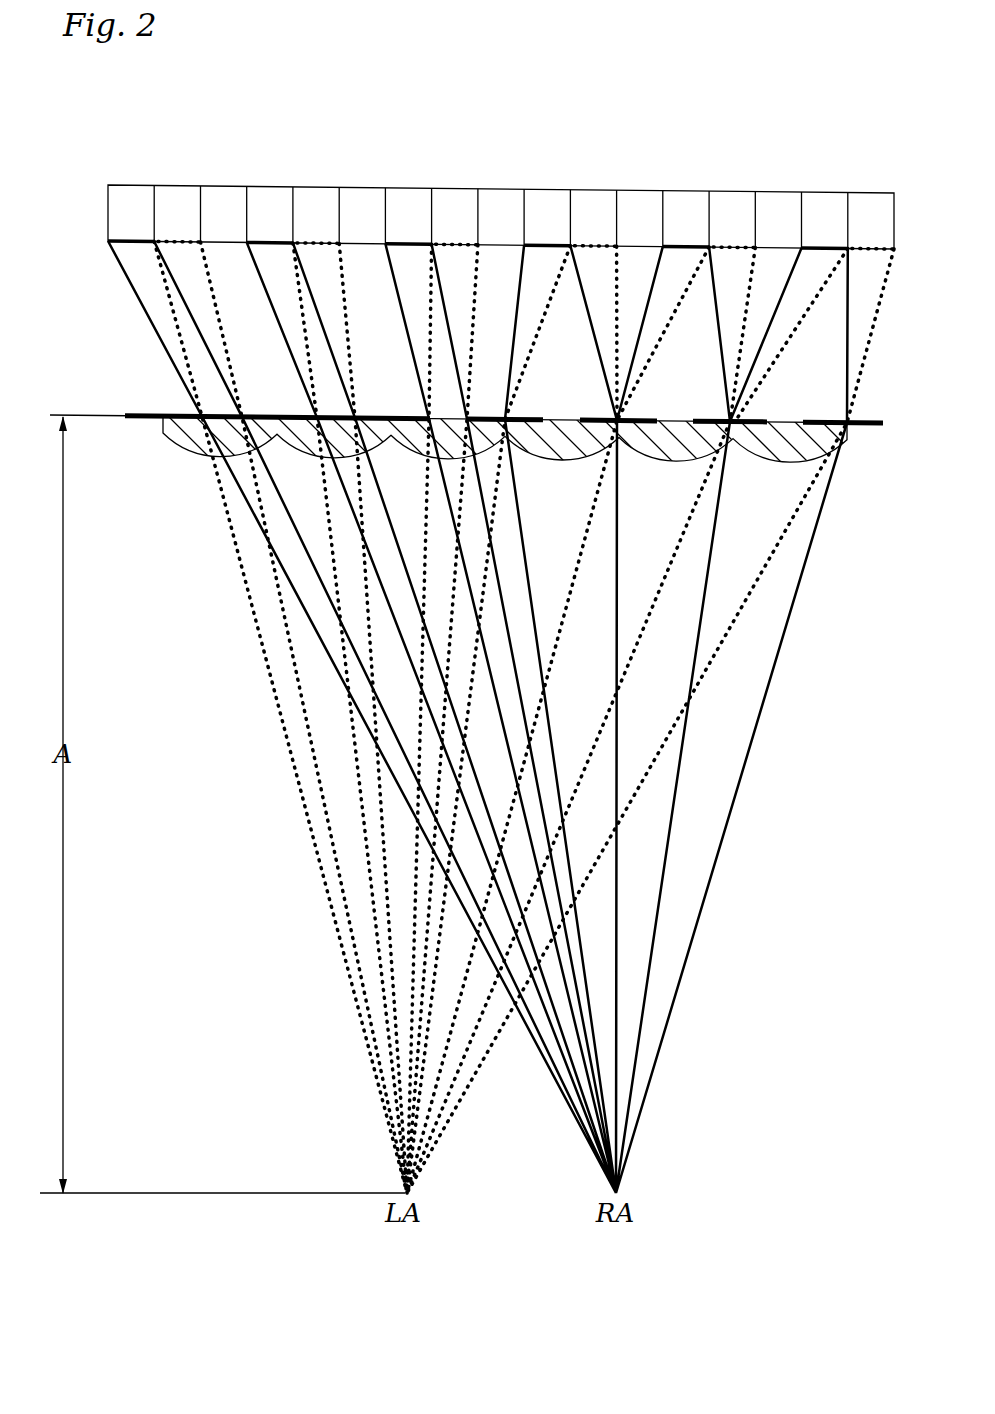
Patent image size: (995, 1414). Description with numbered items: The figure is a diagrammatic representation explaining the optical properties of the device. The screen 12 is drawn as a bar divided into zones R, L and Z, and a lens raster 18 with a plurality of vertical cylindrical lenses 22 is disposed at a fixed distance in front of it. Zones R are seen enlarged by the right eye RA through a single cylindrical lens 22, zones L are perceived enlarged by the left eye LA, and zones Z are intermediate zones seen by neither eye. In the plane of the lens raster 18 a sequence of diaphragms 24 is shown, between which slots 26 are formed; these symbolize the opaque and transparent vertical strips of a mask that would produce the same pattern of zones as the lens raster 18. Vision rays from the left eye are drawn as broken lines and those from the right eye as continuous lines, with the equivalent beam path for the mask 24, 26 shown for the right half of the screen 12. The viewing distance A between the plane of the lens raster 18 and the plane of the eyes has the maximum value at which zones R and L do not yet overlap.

The screen 12 is at (108, 211).
The lens raster 18 is at (167, 438).
The cylindrical lenses 22 is at (194, 454).
The diaphragms 24 is at (866, 428).
The slots 26 is at (790, 422).